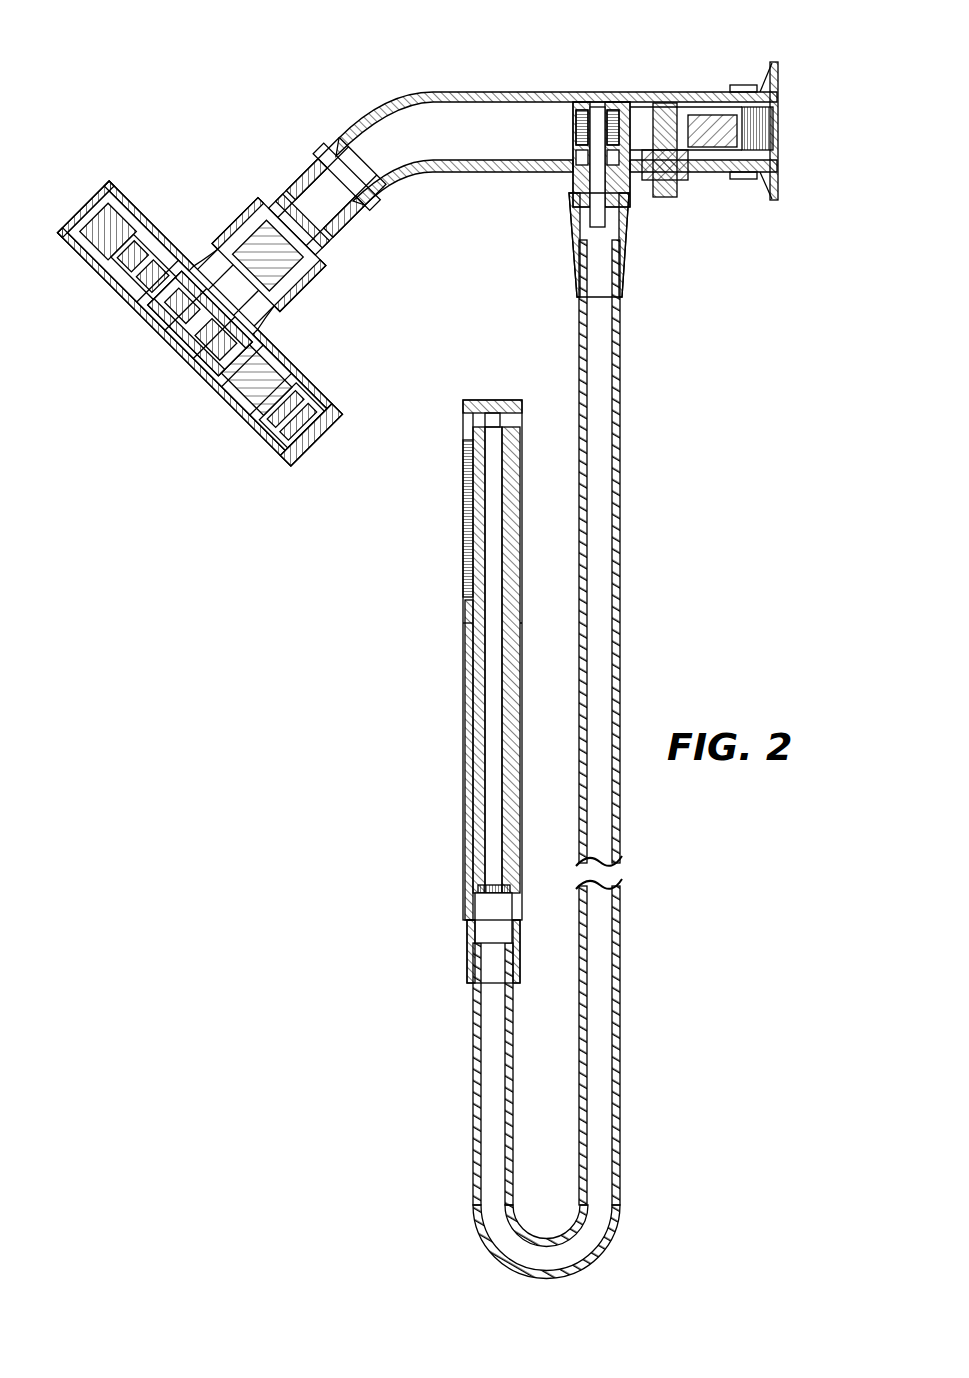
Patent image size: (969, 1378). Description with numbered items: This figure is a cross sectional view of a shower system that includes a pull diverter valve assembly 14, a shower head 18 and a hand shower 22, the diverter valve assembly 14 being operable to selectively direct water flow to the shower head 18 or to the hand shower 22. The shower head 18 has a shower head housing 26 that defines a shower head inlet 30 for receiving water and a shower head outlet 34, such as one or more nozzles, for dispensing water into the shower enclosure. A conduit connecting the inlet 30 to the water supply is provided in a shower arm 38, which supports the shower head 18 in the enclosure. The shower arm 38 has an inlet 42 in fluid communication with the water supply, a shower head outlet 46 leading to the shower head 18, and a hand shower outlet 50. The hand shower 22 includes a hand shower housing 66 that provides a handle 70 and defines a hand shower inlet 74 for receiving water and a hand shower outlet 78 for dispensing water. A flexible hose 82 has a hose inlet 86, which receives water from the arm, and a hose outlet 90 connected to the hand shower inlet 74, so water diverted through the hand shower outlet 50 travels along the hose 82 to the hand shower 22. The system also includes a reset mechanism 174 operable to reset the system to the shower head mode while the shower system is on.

The pull diverter valve assembly 14 is at (640, 232).
The shower head 18 is at (224, 270).
The hand shower 22 is at (347, 660).
The shower head housing 26 is at (313, 448).
The shower head inlet 30 is at (248, 190).
The shower head outlet 34 is at (152, 395).
The shower arm 38 is at (505, 90).
The inlet 42 is at (800, 108).
The shower head outlet 46 is at (326, 128).
The hand shower outlet 50 is at (545, 183).
The hand shower housing 66 is at (430, 745).
The handle 70 is at (522, 778).
The hand shower inlet 74 is at (450, 881).
The hand shower outlet 78 is at (432, 512).
The flexible hose 82 is at (617, 497).
The hose inlet 86 is at (560, 262).
The hose outlet 90 is at (445, 963).
The reset mechanism 174 is at (685, 190).